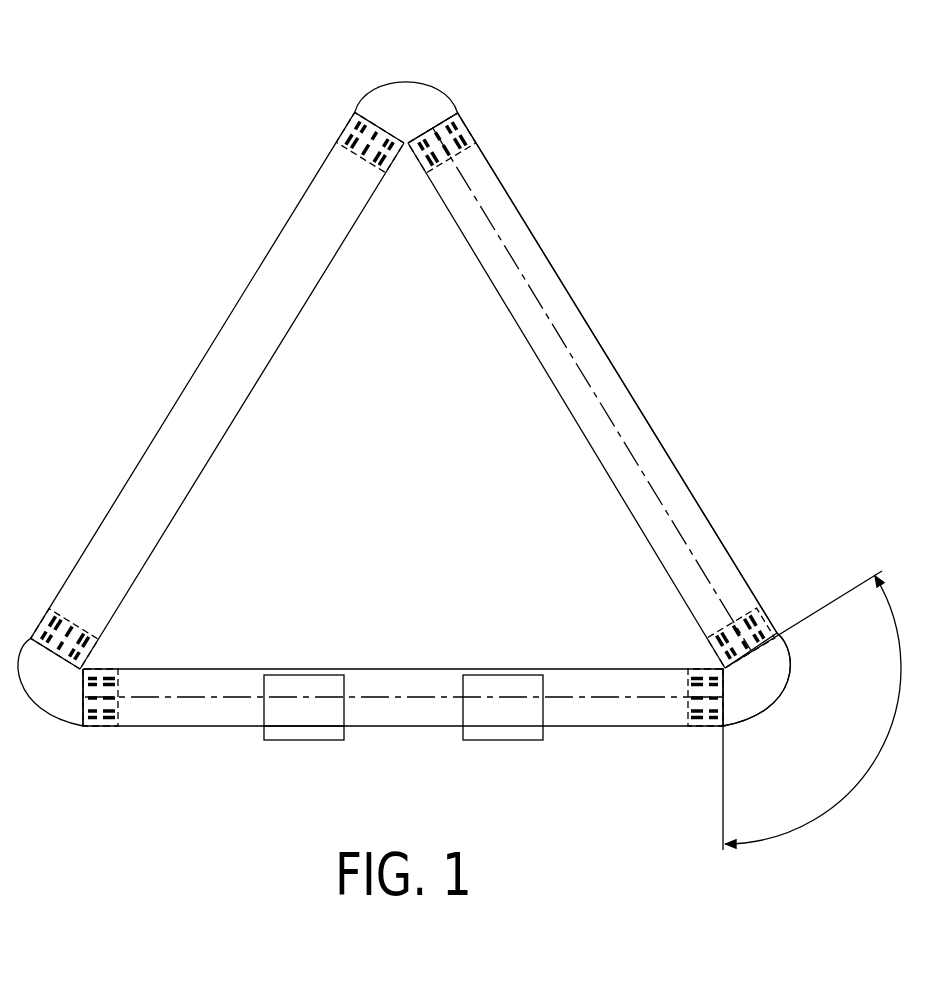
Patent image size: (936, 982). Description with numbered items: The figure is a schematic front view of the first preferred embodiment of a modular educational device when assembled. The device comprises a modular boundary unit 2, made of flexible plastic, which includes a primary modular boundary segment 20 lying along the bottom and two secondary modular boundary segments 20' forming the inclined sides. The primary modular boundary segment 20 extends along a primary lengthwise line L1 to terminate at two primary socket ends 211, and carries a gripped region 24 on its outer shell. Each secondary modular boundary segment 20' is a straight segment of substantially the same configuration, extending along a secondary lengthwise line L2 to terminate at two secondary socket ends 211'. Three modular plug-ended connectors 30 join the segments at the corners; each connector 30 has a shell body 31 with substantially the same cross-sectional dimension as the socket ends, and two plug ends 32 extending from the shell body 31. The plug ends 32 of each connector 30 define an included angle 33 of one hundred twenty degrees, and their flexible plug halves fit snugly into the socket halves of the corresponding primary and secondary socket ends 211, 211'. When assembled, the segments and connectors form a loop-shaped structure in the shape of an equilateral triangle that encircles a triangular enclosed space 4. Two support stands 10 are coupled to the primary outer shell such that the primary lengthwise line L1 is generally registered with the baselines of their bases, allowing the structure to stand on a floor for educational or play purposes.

The modular boundary unit 2 is at (660, 410).
The enclosed space 4 is at (458, 328).
The support stand 10 is at (305, 740).
The primary modular boundary segment 20 is at (403, 734).
The secondary modular boundary segment 20' is at (404, 390).
The gripped region 24 is at (317, 725).
The modular plug-ended connector 30 is at (402, 92).
The shell body 31 is at (770, 705).
The plug end 32 is at (765, 608).
The included angle 33 is at (826, 710).
The primary socket end 211 is at (398, 762).
The secondary socket end 211' is at (649, 385).
The primary lengthwise line L1 is at (163, 700).
The secondary lengthwise line L2 is at (662, 497).